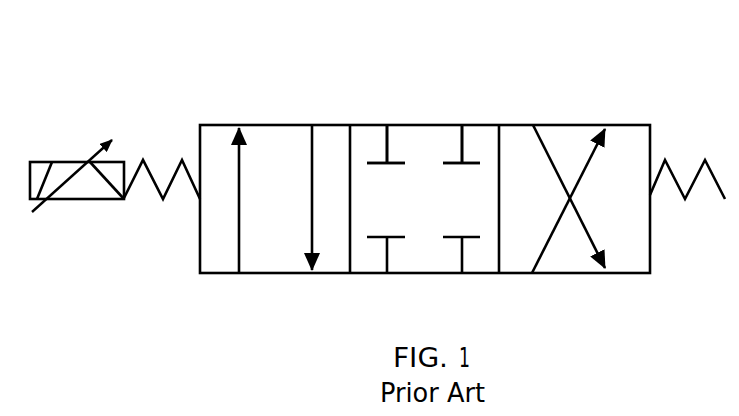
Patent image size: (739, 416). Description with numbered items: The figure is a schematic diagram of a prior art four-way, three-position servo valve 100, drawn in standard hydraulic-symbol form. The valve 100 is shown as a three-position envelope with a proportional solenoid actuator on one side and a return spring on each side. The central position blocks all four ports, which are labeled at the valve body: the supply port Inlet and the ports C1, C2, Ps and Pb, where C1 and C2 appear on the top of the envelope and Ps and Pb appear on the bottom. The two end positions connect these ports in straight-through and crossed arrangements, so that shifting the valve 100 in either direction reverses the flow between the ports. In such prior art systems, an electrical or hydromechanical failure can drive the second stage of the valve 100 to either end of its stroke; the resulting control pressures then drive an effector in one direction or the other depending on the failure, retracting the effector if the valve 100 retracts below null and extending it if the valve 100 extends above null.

The four-way, three-position servo valve 100 is at (53, 66).
The inlet port Inlet is at (423, 112).
The first control port C1 is at (386, 127).
The second control port C2 is at (461, 127).
The supply pressure port Ps is at (386, 271).
The brake pressure port Pb is at (461, 271).